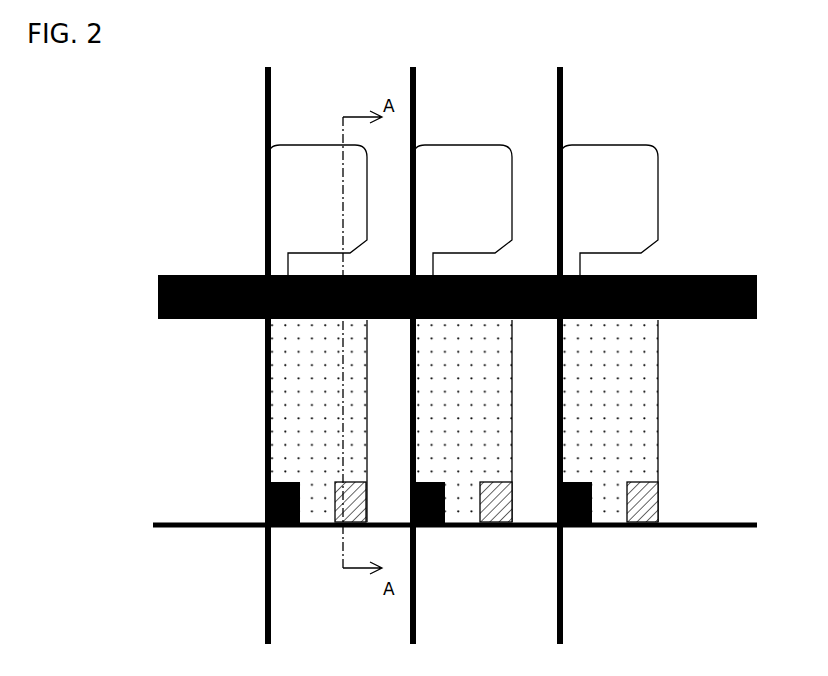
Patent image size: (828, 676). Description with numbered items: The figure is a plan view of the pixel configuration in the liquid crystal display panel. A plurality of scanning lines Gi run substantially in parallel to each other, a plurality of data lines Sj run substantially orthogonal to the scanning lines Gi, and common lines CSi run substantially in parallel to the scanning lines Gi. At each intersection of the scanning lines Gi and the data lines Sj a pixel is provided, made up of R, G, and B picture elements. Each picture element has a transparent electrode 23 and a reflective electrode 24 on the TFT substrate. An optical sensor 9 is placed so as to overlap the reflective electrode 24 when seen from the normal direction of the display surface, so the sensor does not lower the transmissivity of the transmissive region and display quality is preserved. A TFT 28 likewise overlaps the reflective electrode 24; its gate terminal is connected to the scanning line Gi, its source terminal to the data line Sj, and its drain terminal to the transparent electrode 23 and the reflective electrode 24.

The transparent electrode 23 is at (351, 190).
The reflective electrode 24 is at (351, 375).
The optical sensor 9 is at (352, 495).
The TFT 28 is at (291, 528).
The data line Sj is at (271, 85).
The common line CSi is at (188, 274).
The scanning line Gi is at (188, 521).